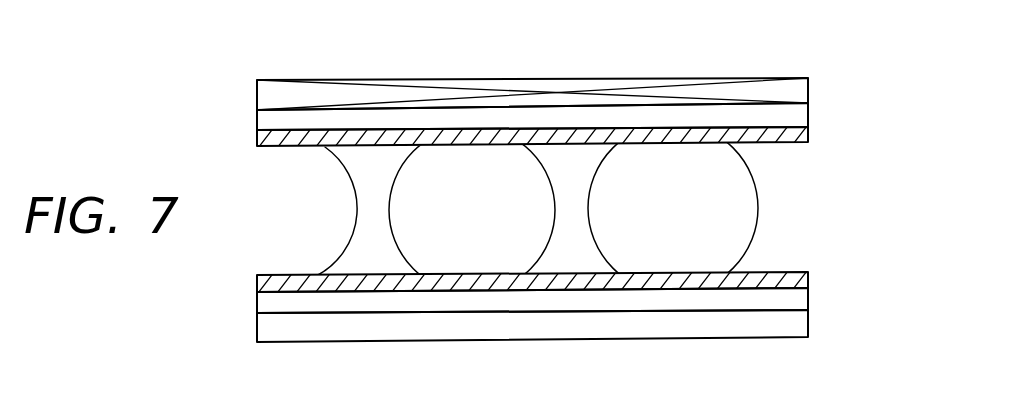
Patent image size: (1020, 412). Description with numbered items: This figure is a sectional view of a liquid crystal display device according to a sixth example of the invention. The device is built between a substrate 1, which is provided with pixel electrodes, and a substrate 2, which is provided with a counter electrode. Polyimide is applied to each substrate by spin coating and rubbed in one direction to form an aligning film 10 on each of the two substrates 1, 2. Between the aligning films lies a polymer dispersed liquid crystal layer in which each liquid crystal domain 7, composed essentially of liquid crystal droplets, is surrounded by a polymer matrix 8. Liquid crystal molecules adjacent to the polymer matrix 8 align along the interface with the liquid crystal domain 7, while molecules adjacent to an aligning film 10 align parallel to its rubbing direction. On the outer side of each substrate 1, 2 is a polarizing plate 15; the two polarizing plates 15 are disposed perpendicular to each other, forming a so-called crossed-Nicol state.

The substrate 1 is at (800, 302).
The substrate 2 is at (798, 111).
The liquid crystal domain 7 is at (740, 210).
The polymer matrix 8 is at (572, 263).
The aligning film 10 is at (803, 131).
The polarizing plate 15 is at (798, 88).